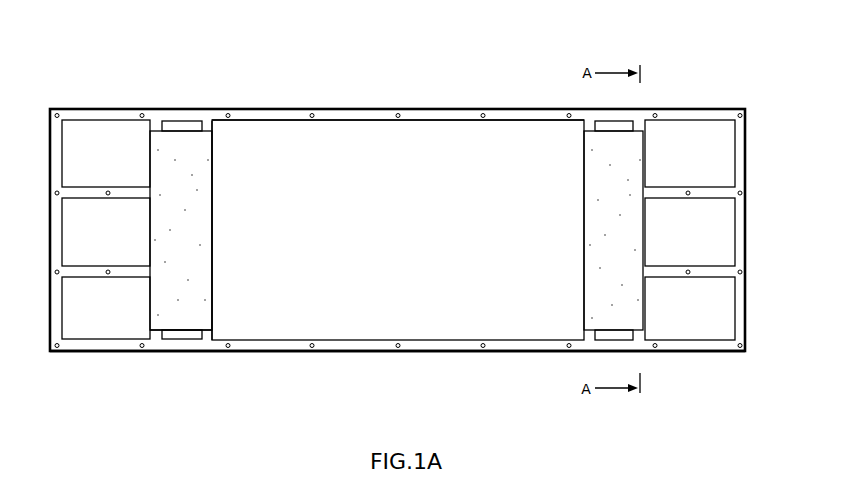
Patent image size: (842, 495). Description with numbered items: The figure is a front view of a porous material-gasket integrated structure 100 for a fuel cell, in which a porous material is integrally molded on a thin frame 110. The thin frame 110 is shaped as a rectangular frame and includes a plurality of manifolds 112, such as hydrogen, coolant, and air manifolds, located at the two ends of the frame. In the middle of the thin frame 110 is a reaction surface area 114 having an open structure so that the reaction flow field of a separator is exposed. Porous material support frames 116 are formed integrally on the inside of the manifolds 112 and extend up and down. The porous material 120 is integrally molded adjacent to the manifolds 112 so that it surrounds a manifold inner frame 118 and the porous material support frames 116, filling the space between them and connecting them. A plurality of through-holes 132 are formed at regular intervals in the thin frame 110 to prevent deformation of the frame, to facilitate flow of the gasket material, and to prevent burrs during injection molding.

The porous material-gasket integrated structure 100 is at (390, 104).
The thin frame 110 is at (345, 114).
The manifolds 112 is at (100, 131).
The reaction surface area 114 is at (450, 133).
The porous material support frames 116 is at (207, 129).
The manifold inner frame 118 is at (157, 129).
The porous material 120 is at (202, 317).
The through-holes 132 is at (399, 348).